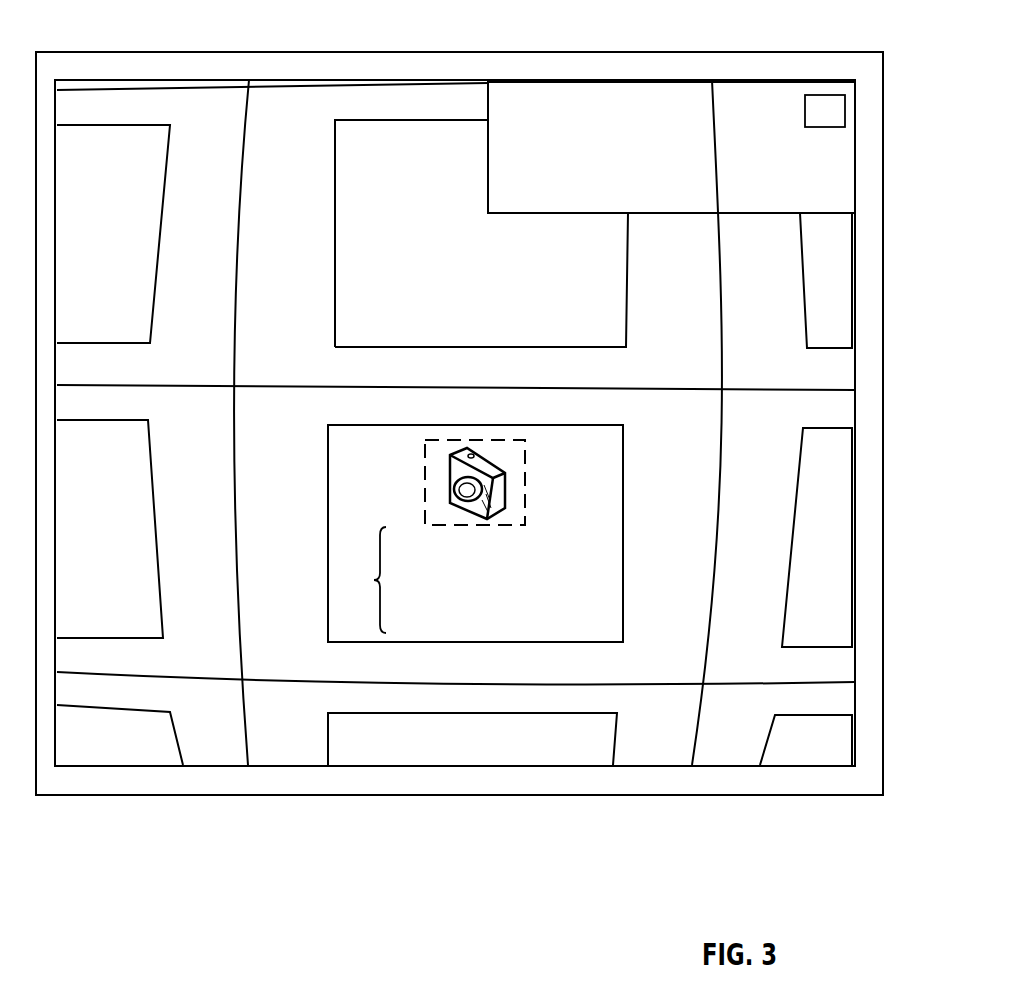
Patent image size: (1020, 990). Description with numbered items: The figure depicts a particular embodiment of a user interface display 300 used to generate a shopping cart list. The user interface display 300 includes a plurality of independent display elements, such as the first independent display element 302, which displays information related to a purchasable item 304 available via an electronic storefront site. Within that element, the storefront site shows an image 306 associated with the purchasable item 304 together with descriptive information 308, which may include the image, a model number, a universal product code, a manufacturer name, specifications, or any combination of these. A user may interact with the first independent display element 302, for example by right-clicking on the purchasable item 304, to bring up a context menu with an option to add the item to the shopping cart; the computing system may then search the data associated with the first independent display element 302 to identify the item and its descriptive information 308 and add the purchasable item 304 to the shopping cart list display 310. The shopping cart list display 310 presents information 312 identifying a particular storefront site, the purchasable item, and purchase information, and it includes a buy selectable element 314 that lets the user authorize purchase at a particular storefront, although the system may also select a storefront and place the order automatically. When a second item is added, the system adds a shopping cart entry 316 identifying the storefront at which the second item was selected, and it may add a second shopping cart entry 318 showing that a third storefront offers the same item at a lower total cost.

The user interface display 300 is at (247, 52).
The first independent display element 302 is at (328, 440).
The purchasable item 304 is at (507, 487).
The image 306 is at (450, 440).
The descriptive information 308 is at (374, 580).
The shopping cart list display 310 is at (620, 80).
The information 312 is at (541, 111).
The buy selectable element 314 is at (822, 97).
The shopping cart entry 316 is at (492, 128).
The second shopping cart entry 318 is at (492, 150).